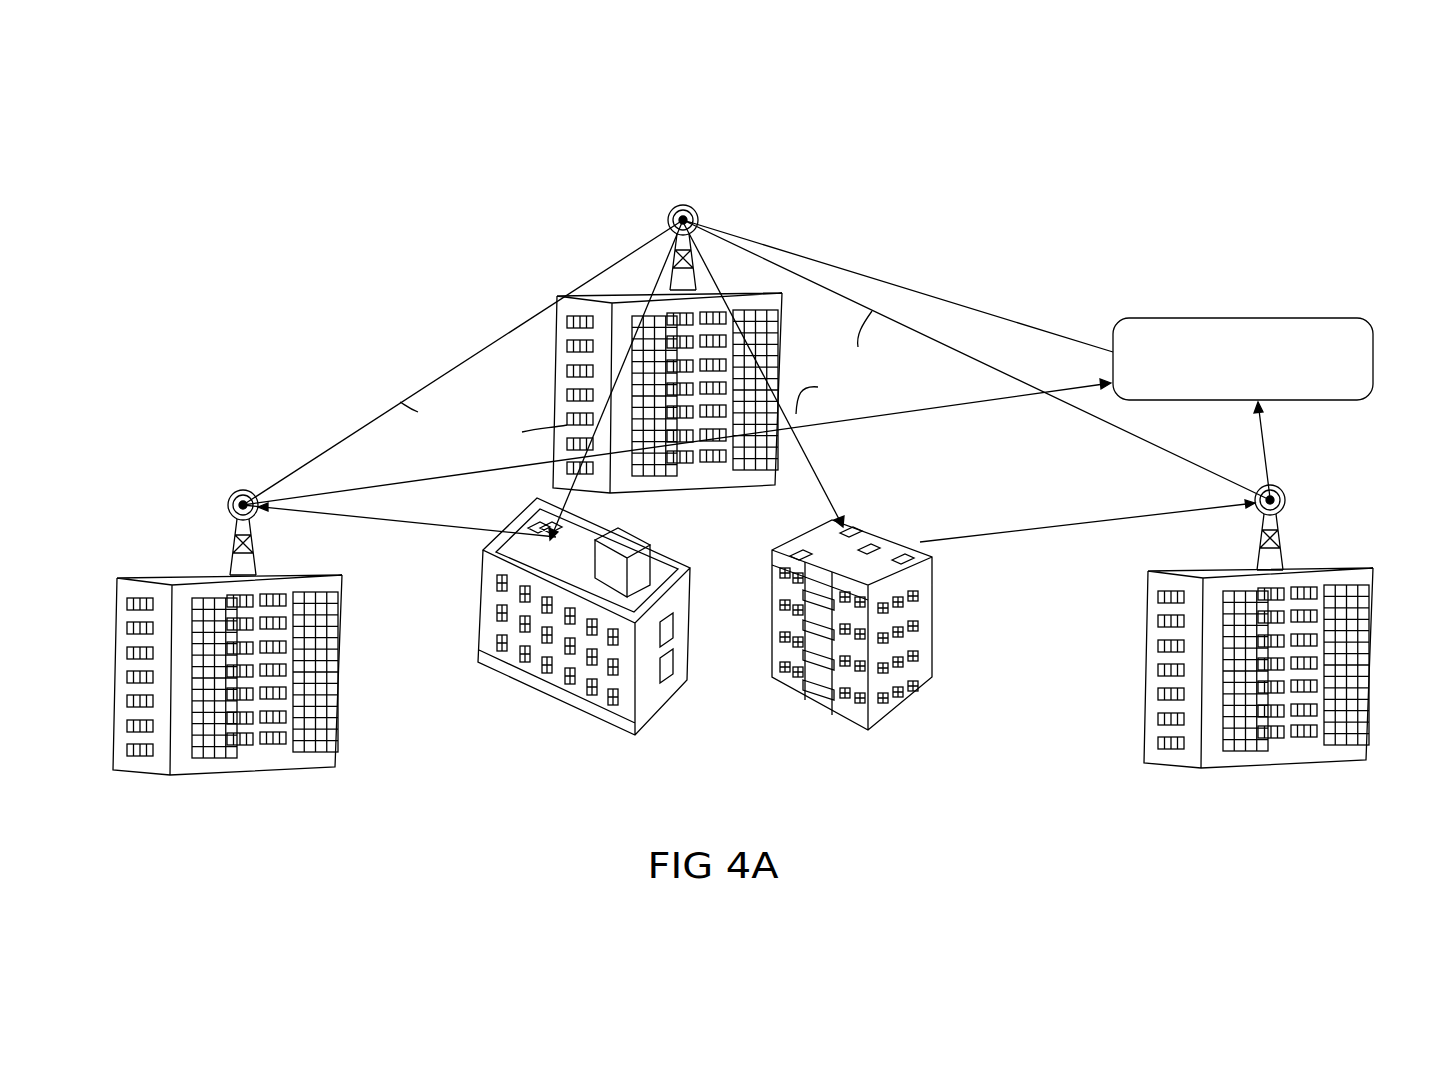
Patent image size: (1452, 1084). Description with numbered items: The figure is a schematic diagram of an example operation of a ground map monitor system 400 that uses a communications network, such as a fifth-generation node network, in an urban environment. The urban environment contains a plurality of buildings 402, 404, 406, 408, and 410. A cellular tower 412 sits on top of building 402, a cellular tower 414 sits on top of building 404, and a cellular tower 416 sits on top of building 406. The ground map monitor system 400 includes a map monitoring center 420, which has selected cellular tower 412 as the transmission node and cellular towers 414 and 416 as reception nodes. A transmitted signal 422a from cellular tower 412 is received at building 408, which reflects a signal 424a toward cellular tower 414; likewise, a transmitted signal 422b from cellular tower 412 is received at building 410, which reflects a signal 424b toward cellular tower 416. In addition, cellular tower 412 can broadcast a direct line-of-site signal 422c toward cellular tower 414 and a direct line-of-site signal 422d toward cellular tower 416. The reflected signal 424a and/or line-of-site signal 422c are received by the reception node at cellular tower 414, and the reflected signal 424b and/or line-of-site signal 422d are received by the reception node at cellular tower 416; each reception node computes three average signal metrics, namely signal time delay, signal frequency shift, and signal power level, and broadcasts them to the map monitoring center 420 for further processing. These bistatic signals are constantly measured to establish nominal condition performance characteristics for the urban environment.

The ground map monitor system 400 is at (1177, 86).
The building 402 is at (556, 357).
The building 404 is at (233, 774).
The building 406 is at (1153, 660).
The building 408 is at (483, 612).
The building 410 is at (924, 612).
The cellular tower 412 is at (675, 262).
The cellular tower 414 is at (228, 543).
The cellular tower 416 is at (1257, 543).
The map monitoring center 420 is at (1226, 318).
The transmitted signal 422a is at (570, 501).
The transmitted signal 422b is at (824, 478).
The direct line-of-site signal 422c is at (382, 418).
The direct line-of-site signal 422d is at (1118, 428).
The reflected signal 424a is at (420, 522).
The reflected signal 424b is at (1047, 530).